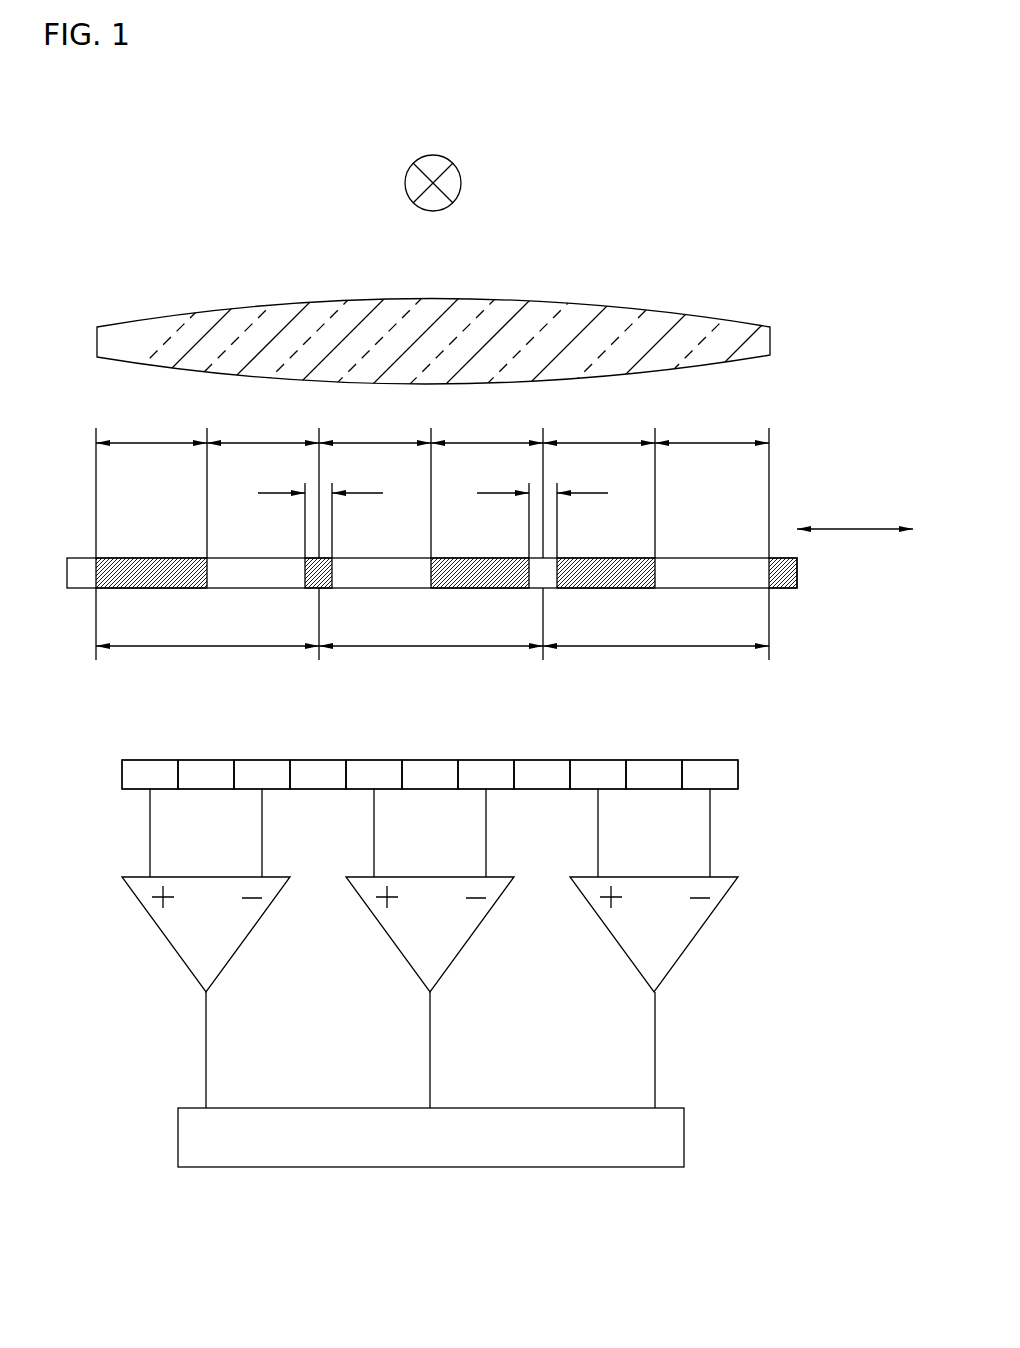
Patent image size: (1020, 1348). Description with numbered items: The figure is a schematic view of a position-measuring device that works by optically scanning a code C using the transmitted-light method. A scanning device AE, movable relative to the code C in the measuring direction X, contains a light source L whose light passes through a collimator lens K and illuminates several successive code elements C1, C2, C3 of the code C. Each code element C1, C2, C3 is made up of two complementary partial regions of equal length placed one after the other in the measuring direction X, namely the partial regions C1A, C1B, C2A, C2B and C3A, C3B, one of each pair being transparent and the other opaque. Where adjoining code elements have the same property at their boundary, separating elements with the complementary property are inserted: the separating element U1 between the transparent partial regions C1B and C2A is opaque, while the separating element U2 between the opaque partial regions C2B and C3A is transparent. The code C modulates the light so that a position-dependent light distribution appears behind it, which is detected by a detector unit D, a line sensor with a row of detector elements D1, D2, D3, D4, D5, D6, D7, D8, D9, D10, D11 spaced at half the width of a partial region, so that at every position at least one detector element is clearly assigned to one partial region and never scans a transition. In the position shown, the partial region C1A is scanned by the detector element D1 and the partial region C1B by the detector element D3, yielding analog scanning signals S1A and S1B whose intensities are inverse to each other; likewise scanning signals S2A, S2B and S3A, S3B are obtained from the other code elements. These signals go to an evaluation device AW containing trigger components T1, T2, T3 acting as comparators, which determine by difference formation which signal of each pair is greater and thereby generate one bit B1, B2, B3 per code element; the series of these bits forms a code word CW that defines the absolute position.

The light source L is at (458, 173).
The collimator lens K is at (118, 341).
The code C is at (82, 572).
The code element C1 is at (207, 625).
The code element C2 is at (431, 625).
The code element C3 is at (656, 625).
The partial region C1A is at (151, 425).
The partial region C1B is at (263, 425).
The partial region C2A is at (375, 425).
The partial region C2B is at (487, 425).
The partial region C3A is at (599, 425).
The partial region C3B is at (712, 425).
The separating element U1 is at (325, 475).
The separating element U2 is at (547, 475).
The measuring direction X is at (855, 509).
The detector unit D is at (102, 777).
The detector element D1 is at (147, 772).
The detector element D2 is at (203, 772).
The detector element D3 is at (259, 772).
The detector element D4 is at (315, 772).
The detector element D5 is at (371, 772).
The detector element D6 is at (427, 772).
The detector element D7 is at (483, 772).
The detector element D8 is at (539, 772).
The detector element D9 is at (595, 772).
The detector element D10 is at (651, 772).
The detector element D11 is at (707, 772).
The scanning signal S1A is at (150, 852).
The scanning signal S1B is at (262, 852).
The scanning signal S2A is at (374, 852).
The scanning signal S2B is at (486, 852).
The scanning signal S3A is at (598, 852).
The scanning signal S3B is at (710, 852).
The trigger component T1 is at (228, 926).
The trigger component T2 is at (452, 926).
The trigger component T3 is at (676, 926).
The scanning device AE is at (430, 862).
The evaluation device AW is at (401, 952).
The bit B1 is at (206, 1068).
The bit B2 is at (430, 1068).
The bit B3 is at (655, 1068).
The code word CW is at (672, 1137).